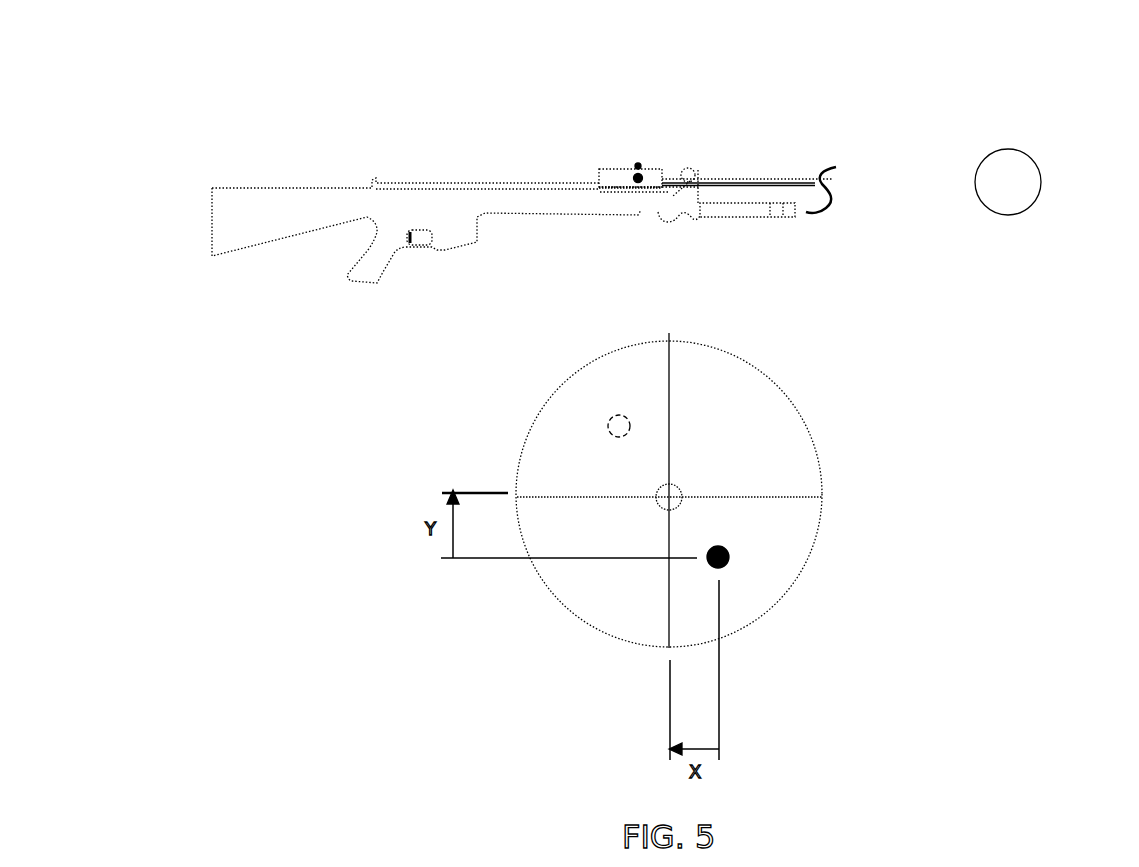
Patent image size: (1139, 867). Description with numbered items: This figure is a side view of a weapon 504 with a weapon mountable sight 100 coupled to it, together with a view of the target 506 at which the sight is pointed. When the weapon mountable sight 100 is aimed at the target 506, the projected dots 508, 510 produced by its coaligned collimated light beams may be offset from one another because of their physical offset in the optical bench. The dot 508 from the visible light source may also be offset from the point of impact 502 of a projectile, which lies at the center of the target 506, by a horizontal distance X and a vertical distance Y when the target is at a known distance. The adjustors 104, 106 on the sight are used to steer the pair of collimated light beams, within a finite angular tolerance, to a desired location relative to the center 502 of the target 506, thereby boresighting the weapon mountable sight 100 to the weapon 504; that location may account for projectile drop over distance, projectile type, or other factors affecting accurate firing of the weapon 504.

The weapon 504 is at (305, 217).
The weapon mountable sight 100 is at (610, 168).
The adjustor 104 is at (640, 164).
The adjustor 106 is at (641, 176).
The target 506 is at (1030, 216).
The point of impact 502 is at (673, 504).
The projected dot 510 is at (610, 415).
The projected dot 508 is at (728, 563).